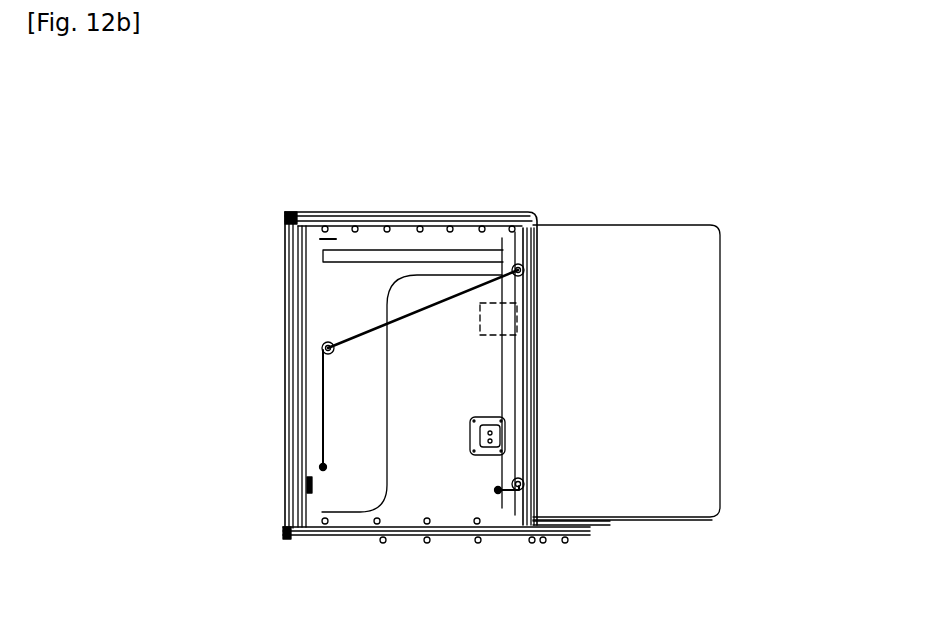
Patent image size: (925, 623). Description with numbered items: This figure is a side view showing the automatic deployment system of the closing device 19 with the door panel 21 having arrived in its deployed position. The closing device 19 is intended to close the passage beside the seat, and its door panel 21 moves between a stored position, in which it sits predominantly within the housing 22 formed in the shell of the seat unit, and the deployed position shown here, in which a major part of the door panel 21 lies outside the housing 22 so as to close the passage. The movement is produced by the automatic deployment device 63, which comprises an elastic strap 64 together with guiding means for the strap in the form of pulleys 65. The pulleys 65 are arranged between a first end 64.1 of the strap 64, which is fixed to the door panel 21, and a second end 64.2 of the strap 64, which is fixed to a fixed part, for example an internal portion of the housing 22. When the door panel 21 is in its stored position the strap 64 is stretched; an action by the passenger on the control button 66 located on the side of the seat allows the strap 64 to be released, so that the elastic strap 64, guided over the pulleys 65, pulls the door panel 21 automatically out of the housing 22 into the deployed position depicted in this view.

The closing device 19 is at (586, 212).
The door panel 21 is at (638, 242).
The housing 22 is at (347, 238).
The automatic deployment device 63 is at (462, 240).
The elastic strap 64 is at (403, 312).
The first end of the strap 64.1 is at (499, 493).
The second end of the strap 64.2 is at (320, 467).
The pulleys 65 is at (322, 347).
The control button 66 is at (522, 308).